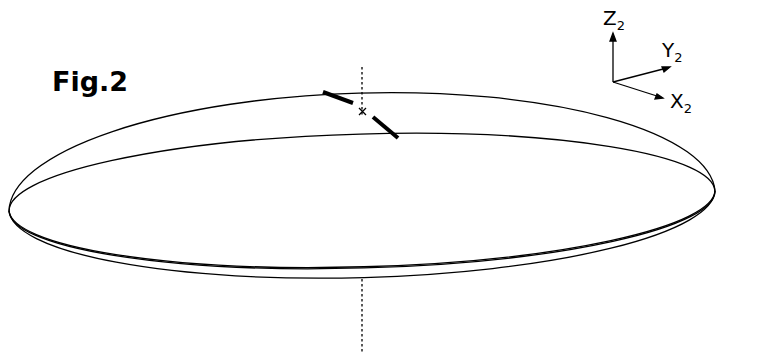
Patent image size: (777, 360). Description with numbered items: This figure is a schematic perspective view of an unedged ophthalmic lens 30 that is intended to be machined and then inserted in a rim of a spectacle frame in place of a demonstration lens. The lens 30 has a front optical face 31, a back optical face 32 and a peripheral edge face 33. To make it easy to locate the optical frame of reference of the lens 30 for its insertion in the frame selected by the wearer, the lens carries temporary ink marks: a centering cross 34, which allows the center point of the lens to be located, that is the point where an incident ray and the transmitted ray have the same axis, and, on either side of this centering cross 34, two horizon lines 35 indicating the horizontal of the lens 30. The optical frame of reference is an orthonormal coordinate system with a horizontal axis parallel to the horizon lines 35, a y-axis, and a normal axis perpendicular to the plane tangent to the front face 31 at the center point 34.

The unedged ophthalmic lens 30 is at (95, 261).
The front optical face 31 is at (244, 98).
The back optical face 32 is at (285, 281).
The edge face 33 is at (487, 273).
The centering cross 34 is at (364, 111).
The horizon lines 35 is at (338, 91).